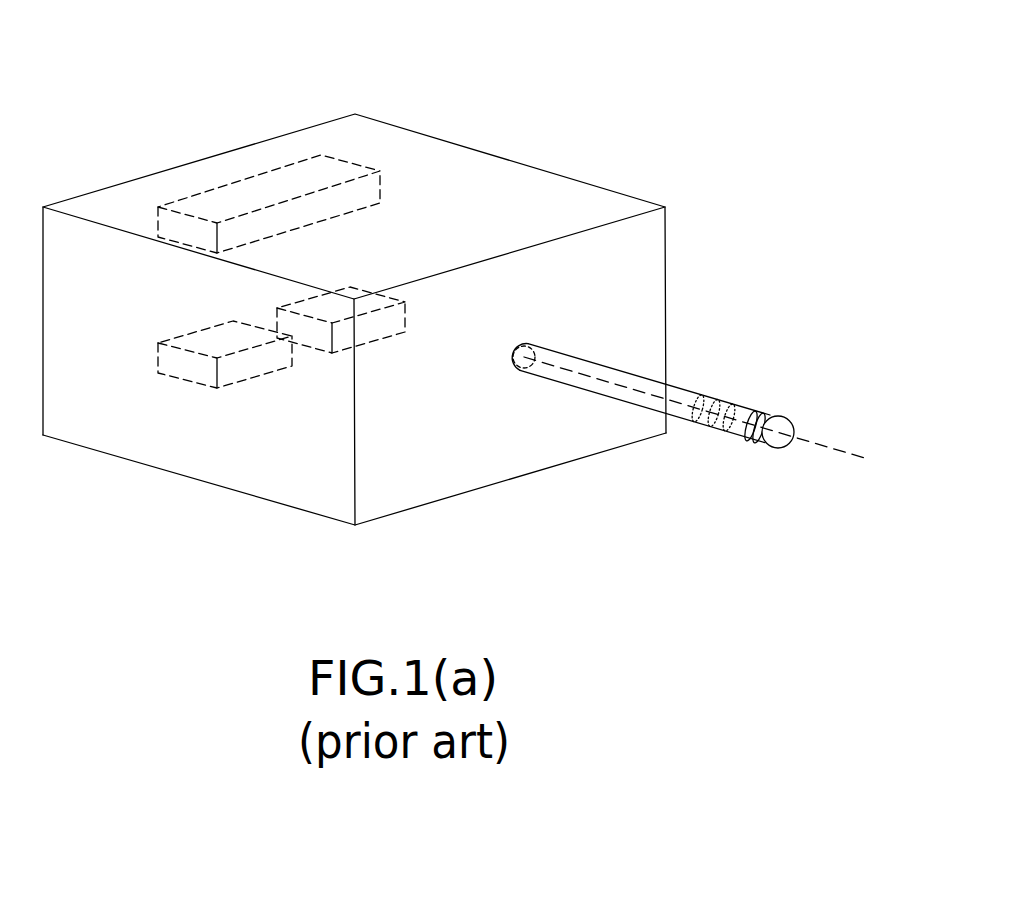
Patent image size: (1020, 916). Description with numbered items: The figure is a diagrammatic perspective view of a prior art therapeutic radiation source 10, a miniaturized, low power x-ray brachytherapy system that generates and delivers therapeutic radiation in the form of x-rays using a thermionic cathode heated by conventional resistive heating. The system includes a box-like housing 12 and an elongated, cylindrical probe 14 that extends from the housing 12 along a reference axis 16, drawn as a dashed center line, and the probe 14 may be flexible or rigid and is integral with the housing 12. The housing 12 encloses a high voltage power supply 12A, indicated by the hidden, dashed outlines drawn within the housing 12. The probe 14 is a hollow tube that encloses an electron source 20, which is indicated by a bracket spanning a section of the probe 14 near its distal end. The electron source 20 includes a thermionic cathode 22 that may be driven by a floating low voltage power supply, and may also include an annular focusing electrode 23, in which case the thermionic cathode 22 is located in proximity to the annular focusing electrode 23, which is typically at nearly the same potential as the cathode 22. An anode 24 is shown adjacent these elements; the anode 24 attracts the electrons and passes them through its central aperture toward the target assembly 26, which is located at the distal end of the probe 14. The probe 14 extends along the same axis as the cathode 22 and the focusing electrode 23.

The therapeutic radiation source 10 is at (632, 86).
The housing 12 is at (475, 150).
The high voltage power supply 12A is at (370, 167).
The probe 14 is at (675, 420).
The reference axis 16 is at (847, 458).
The electron source 20 is at (773, 338).
The thermionic cathode 22 is at (707, 395).
The annular focusing electrode 23 is at (715, 393).
The anode 24 is at (735, 397).
The target assembly 26 is at (800, 399).